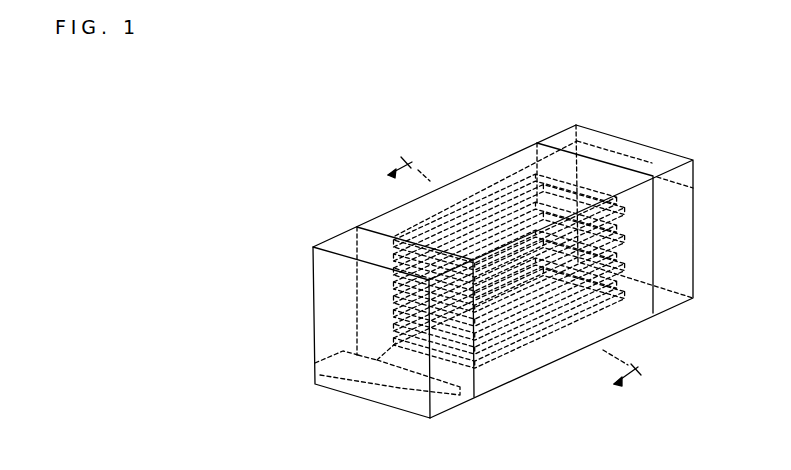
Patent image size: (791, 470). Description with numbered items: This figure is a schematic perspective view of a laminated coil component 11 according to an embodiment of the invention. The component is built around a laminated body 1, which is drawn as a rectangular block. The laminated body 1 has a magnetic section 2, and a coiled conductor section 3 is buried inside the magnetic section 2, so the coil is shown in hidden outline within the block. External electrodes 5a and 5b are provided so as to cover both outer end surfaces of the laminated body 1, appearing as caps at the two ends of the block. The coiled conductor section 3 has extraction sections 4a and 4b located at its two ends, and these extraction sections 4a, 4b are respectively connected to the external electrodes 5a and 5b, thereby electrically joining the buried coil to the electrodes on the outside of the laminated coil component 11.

The laminated body 1 is at (576, 388).
The magnetic section 2 is at (537, 353).
The coiled conductor section 3 is at (488, 353).
The extraction section 4a is at (400, 388).
The extraction section 4b is at (600, 143).
The external electrode 5a is at (312, 278).
The external electrode 5b is at (652, 147).
The laminated coil component 11 is at (691, 372).